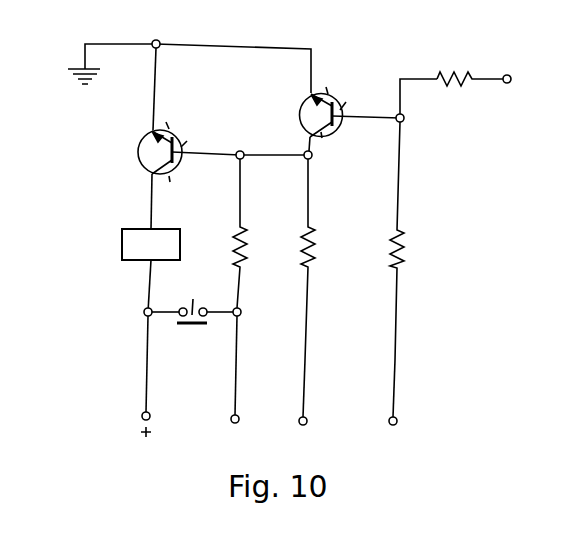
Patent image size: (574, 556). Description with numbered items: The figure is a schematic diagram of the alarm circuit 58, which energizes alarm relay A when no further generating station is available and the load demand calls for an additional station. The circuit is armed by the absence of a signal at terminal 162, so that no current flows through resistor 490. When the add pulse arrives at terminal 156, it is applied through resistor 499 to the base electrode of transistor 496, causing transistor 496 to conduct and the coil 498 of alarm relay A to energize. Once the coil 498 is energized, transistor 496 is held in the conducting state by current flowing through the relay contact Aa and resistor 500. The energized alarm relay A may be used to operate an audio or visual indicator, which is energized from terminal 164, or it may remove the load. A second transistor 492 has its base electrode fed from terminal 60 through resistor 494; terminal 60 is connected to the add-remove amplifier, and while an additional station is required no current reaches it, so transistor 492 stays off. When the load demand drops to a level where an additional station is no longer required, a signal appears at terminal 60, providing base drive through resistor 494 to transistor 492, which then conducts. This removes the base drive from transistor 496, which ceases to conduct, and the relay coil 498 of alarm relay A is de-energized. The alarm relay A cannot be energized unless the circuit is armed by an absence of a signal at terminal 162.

The alarm circuit 58 is at (285, 27).
The transistor 496 is at (138, 147).
The transistor 492 is at (299, 117).
The resistor 494 is at (456, 72).
The terminal 60 is at (507, 74).
The coil 498 is at (122, 248).
The relay contact Aa is at (193, 302).
The resistor 500 is at (253, 246).
The resistor 499 is at (315, 250).
The resistor 490 is at (405, 252).
The terminal 164 is at (234, 424).
The terminal 156 is at (302, 426).
The terminal 162 is at (392, 426).